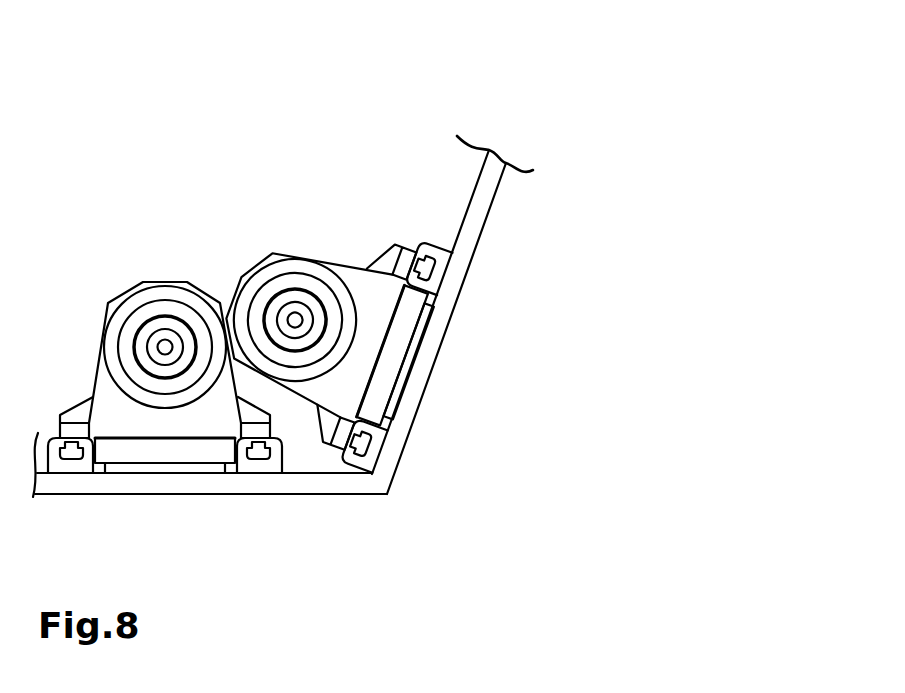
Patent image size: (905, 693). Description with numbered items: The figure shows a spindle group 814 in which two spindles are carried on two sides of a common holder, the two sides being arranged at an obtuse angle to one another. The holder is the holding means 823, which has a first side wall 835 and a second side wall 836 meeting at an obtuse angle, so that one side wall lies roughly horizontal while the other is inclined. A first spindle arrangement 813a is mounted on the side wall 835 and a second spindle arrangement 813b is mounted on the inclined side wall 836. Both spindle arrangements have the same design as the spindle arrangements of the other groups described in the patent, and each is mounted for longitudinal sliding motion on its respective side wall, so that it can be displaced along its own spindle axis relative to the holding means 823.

The spindle group 814 is at (300, 167).
The spindle arrangement 813a is at (128, 448).
The spindle arrangement 813b is at (372, 343).
The holding means 823 is at (505, 168).
The side wall 835 is at (265, 483).
The side wall 836 is at (424, 398).